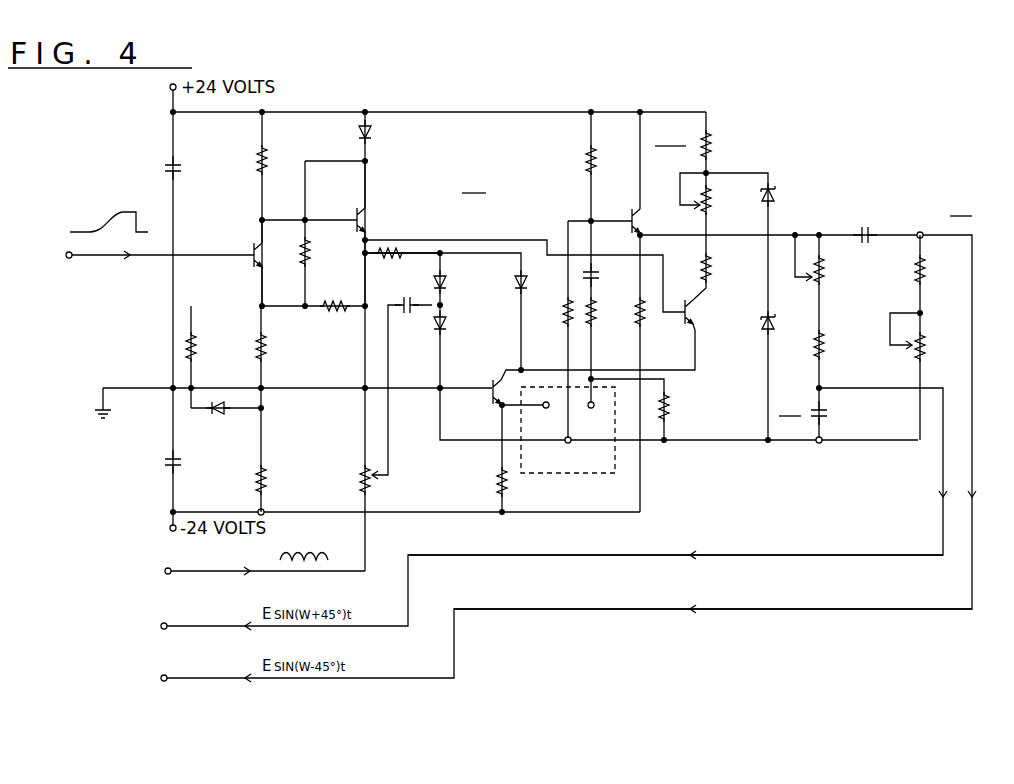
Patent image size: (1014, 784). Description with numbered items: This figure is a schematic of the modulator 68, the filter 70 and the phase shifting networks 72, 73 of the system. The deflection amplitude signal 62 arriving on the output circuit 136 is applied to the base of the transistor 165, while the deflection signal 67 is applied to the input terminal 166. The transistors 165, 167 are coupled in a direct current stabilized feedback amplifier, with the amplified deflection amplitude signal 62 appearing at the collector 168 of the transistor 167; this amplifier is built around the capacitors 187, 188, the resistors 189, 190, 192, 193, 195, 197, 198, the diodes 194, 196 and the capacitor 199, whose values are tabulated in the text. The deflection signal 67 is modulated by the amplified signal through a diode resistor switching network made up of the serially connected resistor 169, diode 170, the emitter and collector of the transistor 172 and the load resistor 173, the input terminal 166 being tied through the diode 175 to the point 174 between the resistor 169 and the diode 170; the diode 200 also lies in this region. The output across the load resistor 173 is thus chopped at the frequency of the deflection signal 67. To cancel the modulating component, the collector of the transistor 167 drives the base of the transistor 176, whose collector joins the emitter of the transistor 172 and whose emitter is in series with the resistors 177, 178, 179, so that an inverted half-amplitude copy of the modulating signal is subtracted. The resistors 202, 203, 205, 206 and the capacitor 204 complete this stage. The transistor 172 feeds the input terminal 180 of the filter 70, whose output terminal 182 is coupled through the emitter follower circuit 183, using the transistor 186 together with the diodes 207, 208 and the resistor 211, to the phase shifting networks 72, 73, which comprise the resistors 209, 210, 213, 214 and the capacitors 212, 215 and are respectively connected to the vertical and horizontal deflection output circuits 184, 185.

The deflection amplitude signal 62 is at (130, 226).
The deflection signal 67 is at (316, 553).
The modulator 68 is at (474, 184).
The filter 70 is at (616, 461).
The phase shifting network 72 is at (790, 407).
The phase shifting network 73 is at (961, 207).
The output circuit 136 is at (66, 255).
The transistor 165 is at (253, 241).
The input terminal 166 is at (164, 573).
The transistor 167 is at (367, 218).
The collector 168 is at (362, 262).
The resistor 169 is at (389, 262).
The diode 170 is at (527, 282).
The transistor 172 is at (490, 384).
The load resistor 173 is at (497, 475).
The point 174 is at (441, 252).
The diode 175 is at (447, 280).
The transistor 176 is at (695, 322).
The resistor 177 is at (712, 135).
The resistor 178 is at (711, 206).
The resistor 179 is at (712, 270).
The input terminal 180 is at (546, 401).
The output terminal 182 is at (592, 400).
The emitter follower circuit 183 is at (671, 137).
The vertical deflection output circuit 184 is at (576, 556).
The horizontal deflection output circuit 185 is at (586, 609).
The transistor 186 is at (641, 222).
The capacitor 187 is at (177, 166).
The capacitor 188 is at (163, 462).
The resistor 189 is at (266, 165).
The resistor 190 is at (338, 311).
The resistor 192 is at (196, 338).
The resistor 193 is at (264, 338).
The diode 194 is at (221, 414).
The resistor 195 is at (265, 470).
The diode 196 is at (371, 130).
The resistor 197 is at (310, 255).
The resistor 198 is at (358, 470).
The capacitor 199 is at (411, 318).
The diode 200 is at (448, 322).
The resistor 202 is at (563, 318).
The resistor 203 is at (585, 163).
The capacitor 204 is at (599, 274).
The resistor 205 is at (595, 316).
The resistor 206 is at (645, 318).
The diode 207 is at (774, 188).
The diode 208 is at (773, 317).
The resistor 209 is at (828, 274).
The resistor 210 is at (826, 340).
The resistor 211 is at (672, 412).
The capacitor 212 is at (869, 228).
The resistor 213 is at (928, 272).
The resistor 214 is at (926, 340).
The capacitor 215 is at (829, 413).